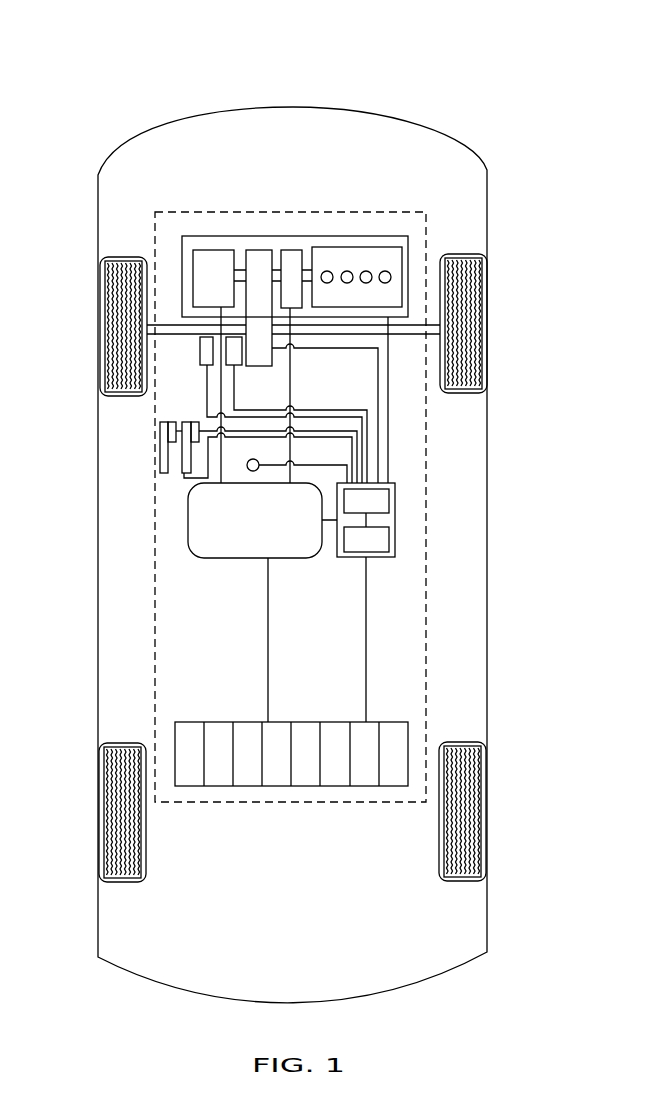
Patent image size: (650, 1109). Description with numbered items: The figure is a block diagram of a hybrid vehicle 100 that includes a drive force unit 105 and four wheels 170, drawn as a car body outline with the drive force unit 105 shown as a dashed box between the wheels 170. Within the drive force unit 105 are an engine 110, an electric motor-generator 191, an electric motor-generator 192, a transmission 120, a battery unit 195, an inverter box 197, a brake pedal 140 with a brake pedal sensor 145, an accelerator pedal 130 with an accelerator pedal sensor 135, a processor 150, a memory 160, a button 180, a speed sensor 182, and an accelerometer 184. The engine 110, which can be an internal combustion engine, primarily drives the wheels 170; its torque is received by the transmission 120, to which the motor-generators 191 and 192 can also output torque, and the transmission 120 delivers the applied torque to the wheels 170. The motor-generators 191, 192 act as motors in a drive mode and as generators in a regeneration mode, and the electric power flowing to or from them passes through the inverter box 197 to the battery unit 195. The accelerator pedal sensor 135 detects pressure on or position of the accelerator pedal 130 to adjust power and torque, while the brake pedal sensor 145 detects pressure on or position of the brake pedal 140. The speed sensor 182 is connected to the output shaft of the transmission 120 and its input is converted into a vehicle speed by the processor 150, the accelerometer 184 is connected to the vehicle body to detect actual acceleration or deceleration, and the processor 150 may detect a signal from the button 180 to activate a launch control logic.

The hybrid vehicle 100 is at (62, 78).
The drive force unit 105 is at (154, 528).
The engine 110 is at (357, 247).
The transmission 120 is at (257, 250).
The accelerator pedal 130 is at (188, 474).
The accelerator pedal sensor 135 is at (193, 421).
The brake pedal 140 is at (161, 455).
The brake pedal sensor 145 is at (170, 428).
The processor 150 is at (395, 502).
The memory 160 is at (395, 541).
The wheels 170 is at (100, 330).
The button 180 is at (259, 462).
The speed sensor 182 is at (234, 365).
The accelerometer 184 is at (200, 357).
The electric motor-generator 191 is at (214, 250).
The electric motor-generator 192 is at (291, 250).
The battery unit 195 is at (219, 722).
The inverter box 197 is at (237, 559).